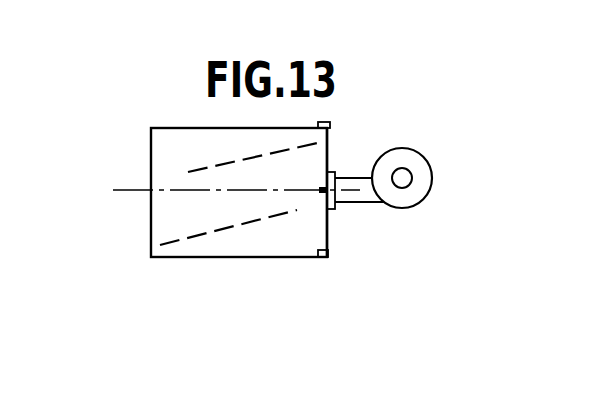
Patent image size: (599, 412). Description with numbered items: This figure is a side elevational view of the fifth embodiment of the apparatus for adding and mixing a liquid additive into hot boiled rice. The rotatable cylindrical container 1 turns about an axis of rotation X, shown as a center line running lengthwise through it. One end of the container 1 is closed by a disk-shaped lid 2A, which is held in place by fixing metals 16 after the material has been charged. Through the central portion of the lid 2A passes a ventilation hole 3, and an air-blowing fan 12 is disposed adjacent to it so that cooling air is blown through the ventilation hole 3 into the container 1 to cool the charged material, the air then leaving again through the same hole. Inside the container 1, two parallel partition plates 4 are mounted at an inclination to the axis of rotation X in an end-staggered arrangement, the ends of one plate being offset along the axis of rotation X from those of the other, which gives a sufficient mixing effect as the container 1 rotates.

The container 1 is at (287, 258).
The lid 2A is at (330, 152).
The ventilation hole 3 is at (337, 207).
The partition plates 4 is at (190, 172).
The air-blowing fan 12 is at (432, 182).
The fixing metals 16 is at (335, 258).
The axis of rotation X is at (130, 192).